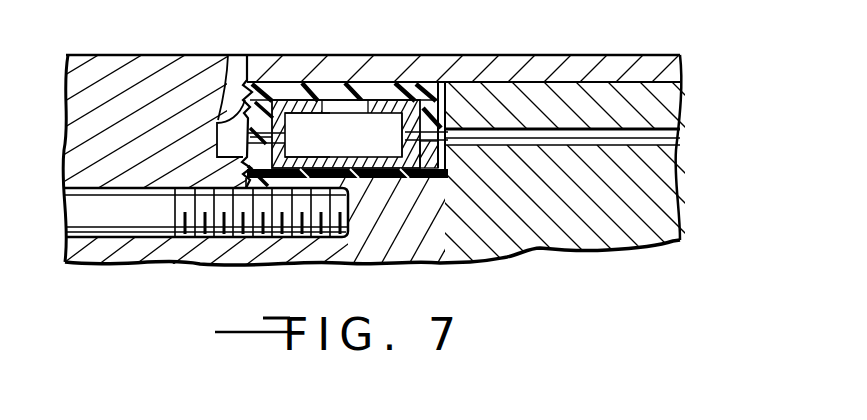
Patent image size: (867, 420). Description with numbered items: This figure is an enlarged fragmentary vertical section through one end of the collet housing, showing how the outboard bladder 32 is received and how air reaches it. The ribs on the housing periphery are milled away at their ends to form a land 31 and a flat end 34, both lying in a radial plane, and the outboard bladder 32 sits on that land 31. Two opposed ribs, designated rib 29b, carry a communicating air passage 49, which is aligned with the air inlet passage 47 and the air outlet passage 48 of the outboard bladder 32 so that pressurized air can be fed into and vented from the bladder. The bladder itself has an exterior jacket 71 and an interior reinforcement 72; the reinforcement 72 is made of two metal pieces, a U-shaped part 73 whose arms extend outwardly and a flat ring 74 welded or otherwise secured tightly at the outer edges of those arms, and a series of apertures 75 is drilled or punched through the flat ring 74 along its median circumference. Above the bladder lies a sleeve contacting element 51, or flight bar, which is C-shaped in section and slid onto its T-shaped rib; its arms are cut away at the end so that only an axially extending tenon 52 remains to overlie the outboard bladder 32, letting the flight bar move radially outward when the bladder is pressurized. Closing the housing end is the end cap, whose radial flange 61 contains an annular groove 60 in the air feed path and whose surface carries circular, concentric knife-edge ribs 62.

The radial flange 61 is at (100, 54).
The annular groove 60 is at (228, 55).
The knife-edge ribs 62 is at (252, 74).
The tenon 52 is at (318, 56).
The apertures 75 is at (360, 102).
The outboard bladder 32 is at (382, 72).
The flat end 34 is at (436, 95).
The sleeve contacting element 51 is at (588, 50).
The air passage 49 is at (662, 133).
The air outlet passage 48 is at (403, 134).
The flat ring 74 is at (293, 118).
The air inlet passage 47 is at (288, 148).
The U-shaped part 73 is at (382, 157).
The exterior jacket 71 is at (387, 178).
The interior reinforcement 72 is at (364, 177).
The land 31 is at (440, 168).
The rib with air passage 29b is at (550, 259).